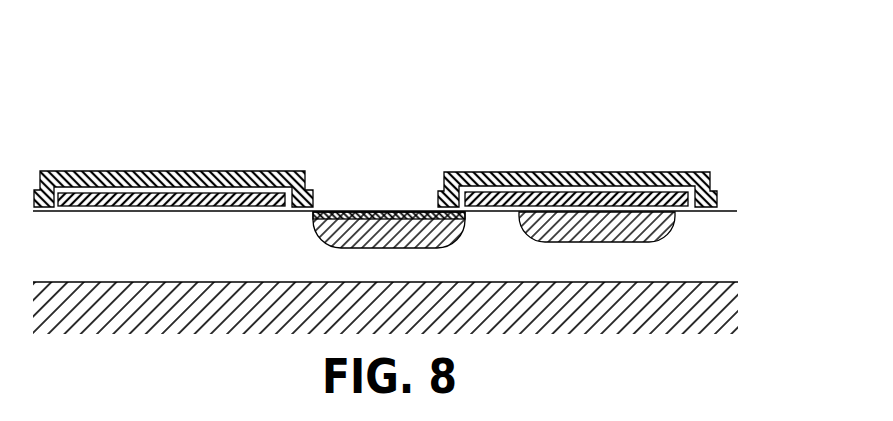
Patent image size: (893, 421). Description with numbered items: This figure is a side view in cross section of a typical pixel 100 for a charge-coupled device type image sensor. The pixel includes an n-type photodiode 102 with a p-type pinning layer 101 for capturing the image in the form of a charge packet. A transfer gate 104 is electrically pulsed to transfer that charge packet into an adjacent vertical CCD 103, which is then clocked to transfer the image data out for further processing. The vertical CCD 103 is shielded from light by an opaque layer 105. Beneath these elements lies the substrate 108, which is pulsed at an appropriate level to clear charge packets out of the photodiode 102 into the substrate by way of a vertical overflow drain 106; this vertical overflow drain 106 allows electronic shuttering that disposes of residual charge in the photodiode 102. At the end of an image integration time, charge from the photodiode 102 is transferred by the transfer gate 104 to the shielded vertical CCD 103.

The pixel 100 is at (440, 83).
The p-type pinning layer 101 is at (411, 225).
The n-type photodiode 102 is at (368, 187).
The vertical CCD 103 is at (641, 225).
The transfer gate 104 is at (480, 192).
The opaque layer 105 is at (560, 172).
The vertical overflow drain 106 is at (735, 243).
The substrate 108 is at (738, 301).